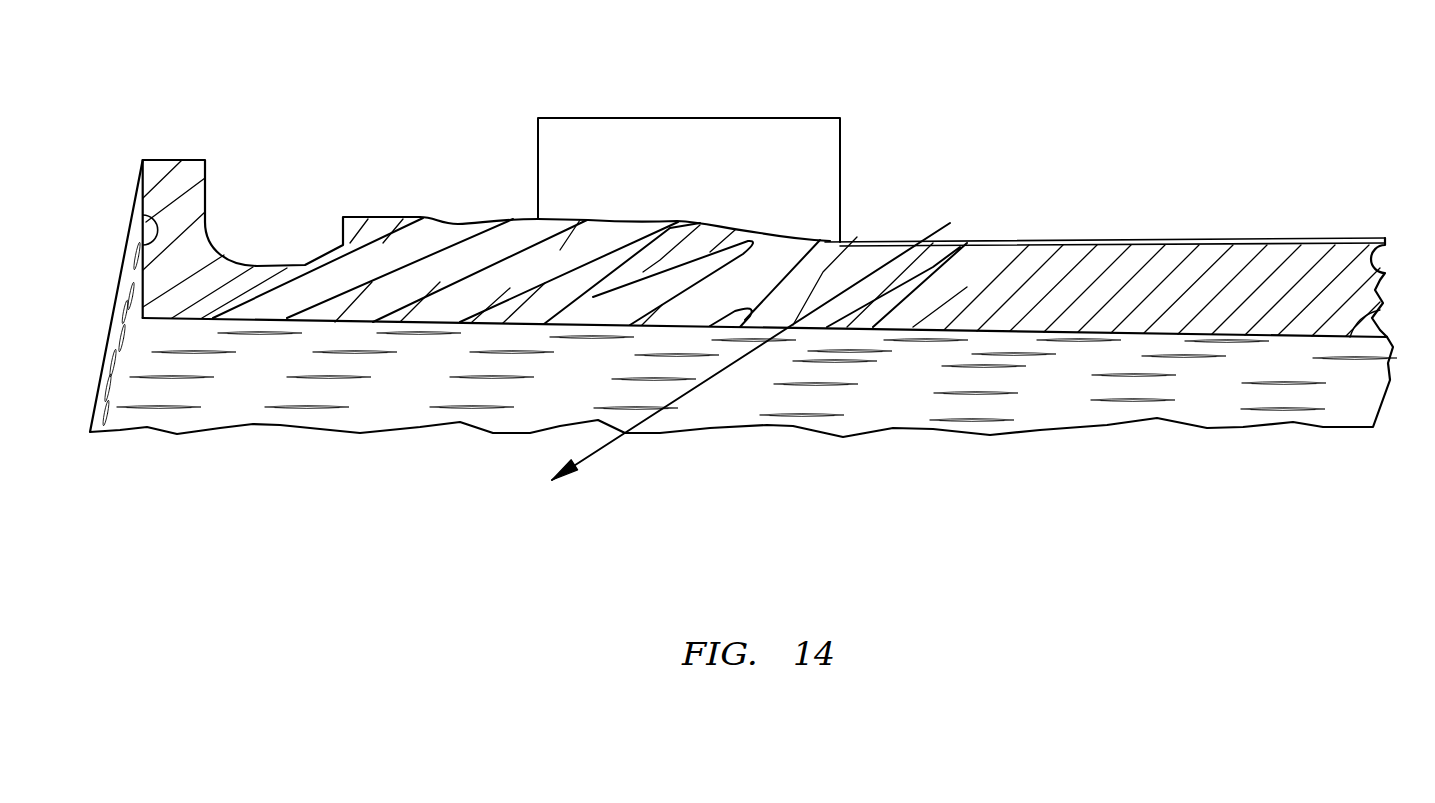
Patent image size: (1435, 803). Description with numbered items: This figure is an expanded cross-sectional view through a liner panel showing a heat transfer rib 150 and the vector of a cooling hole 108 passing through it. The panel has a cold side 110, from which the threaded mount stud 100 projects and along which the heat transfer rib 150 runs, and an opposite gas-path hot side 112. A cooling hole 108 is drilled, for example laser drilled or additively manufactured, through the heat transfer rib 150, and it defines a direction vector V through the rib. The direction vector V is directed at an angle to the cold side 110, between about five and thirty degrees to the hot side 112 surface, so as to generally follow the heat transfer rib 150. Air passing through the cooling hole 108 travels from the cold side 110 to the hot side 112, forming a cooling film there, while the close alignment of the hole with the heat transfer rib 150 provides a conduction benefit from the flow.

The threaded mount stud 100 is at (793, 135).
The cooling hole 108 is at (894, 252).
The cold side 110 is at (1235, 237).
The hot side 112 is at (1037, 413).
The heat transfer rib 150 is at (1110, 287).
The direction vector V is at (593, 453).